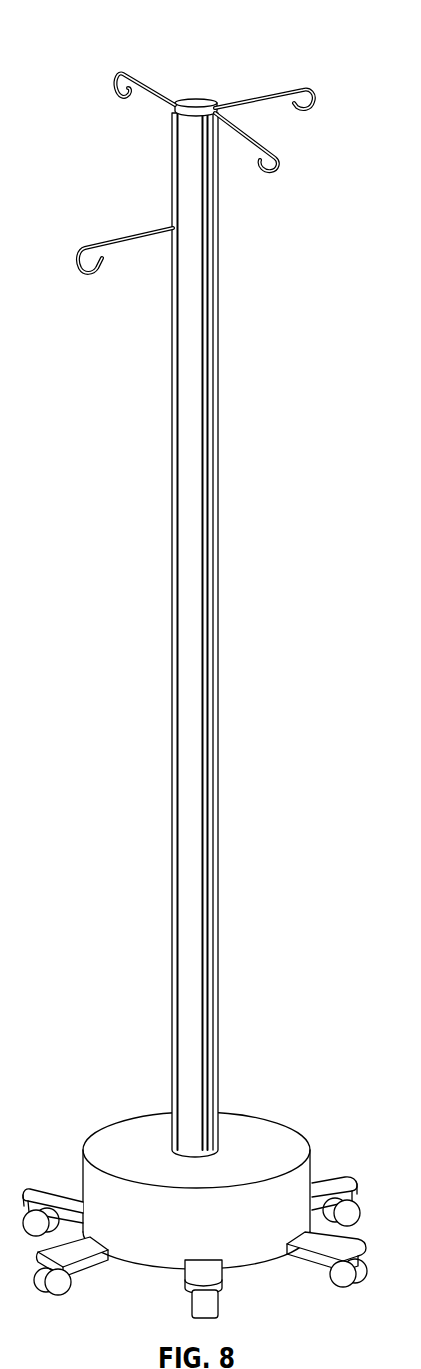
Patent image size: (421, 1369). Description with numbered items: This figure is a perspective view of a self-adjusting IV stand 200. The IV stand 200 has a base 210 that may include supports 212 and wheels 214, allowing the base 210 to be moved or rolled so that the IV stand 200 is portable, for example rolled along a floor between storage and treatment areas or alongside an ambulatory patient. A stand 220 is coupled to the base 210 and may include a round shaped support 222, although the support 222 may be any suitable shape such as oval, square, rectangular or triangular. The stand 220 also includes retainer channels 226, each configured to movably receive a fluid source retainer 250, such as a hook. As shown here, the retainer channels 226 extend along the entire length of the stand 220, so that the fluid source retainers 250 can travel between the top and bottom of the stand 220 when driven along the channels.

The IV stand 200 is at (207, 665).
The base 210 is at (283, 1122).
The supports 212 is at (55, 1188).
The wheels 214 is at (63, 1282).
The stand 220 is at (239, 628).
The round shaped support 222 is at (218, 461).
The retainer channels 226 is at (209, 331).
The fluid source retainers 250 is at (315, 98).